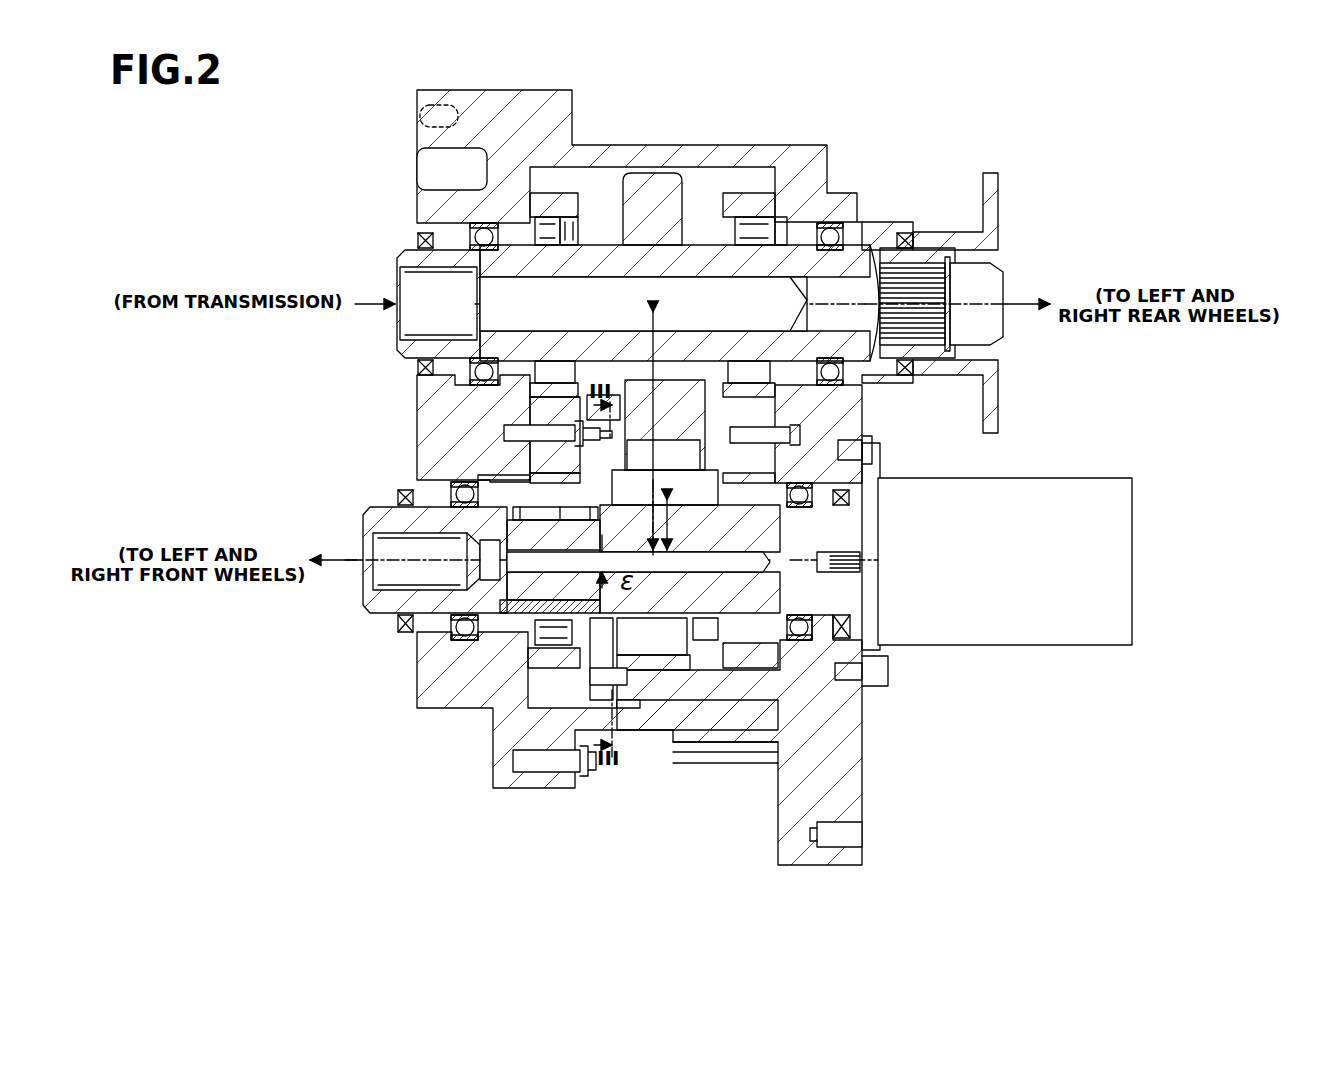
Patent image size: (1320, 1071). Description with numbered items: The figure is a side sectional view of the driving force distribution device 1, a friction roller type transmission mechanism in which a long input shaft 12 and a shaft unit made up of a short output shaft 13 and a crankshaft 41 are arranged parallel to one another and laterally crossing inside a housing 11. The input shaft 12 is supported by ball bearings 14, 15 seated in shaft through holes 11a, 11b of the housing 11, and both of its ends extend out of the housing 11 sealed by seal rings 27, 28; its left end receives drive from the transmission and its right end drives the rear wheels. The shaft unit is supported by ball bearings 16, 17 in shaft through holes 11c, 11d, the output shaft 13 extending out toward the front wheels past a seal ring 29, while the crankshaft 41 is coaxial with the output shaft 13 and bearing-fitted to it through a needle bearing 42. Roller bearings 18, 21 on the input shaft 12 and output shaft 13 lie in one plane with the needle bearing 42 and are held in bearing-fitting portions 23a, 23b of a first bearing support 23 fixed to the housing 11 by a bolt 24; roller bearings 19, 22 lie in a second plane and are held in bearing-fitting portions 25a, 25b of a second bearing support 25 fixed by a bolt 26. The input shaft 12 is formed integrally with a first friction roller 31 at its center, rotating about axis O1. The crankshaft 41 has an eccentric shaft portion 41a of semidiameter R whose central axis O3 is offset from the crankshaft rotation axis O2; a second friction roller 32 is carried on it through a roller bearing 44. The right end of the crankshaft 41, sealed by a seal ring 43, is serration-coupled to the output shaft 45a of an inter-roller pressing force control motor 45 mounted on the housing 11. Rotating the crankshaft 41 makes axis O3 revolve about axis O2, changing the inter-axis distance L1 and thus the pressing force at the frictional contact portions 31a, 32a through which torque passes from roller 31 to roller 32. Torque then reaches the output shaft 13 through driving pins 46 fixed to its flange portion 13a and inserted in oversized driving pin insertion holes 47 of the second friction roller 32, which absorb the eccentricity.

The driving force distribution device 1 is at (745, 142).
The housing 11 is at (565, 95).
The shaft through hole 11a is at (425, 240).
The shaft through hole 11b is at (887, 237).
The shaft through hole 11c is at (405, 632).
The shaft through hole 11d is at (848, 640).
The input shaft 12 is at (620, 230).
The output shaft 13 is at (497, 642).
The flange portion 13a is at (565, 774).
The ball bearing 14 is at (478, 235).
The ball bearing 15 is at (832, 235).
The ball bearing 16 is at (466, 642).
The ball bearing 17 is at (800, 640).
The roller bearing 18 is at (555, 235).
The roller bearing 19 is at (750, 235).
The roller bearing 21 is at (520, 605).
The roller bearing 22 is at (835, 640).
The first bearing support 23 is at (553, 193).
The bearing-fitting portion 23a is at (578, 218).
The bearing-fitting portion 23b is at (550, 660).
The bolt 24 is at (560, 470).
The second bearing support 25 is at (750, 195).
The bearing-fitting portion 25a is at (781, 218).
The bearing-fitting portion 25b is at (750, 672).
The bolt 26 is at (800, 432).
The seal ring 27 is at (418, 362).
The seal ring 28 is at (913, 232).
The seal ring 29 is at (405, 495).
The first friction roller 31 is at (653, 170).
The frictional contact portion 31a is at (665, 458).
The second friction roller 32 is at (660, 672).
The frictional contact portion 32a is at (680, 440).
The crankshaft 41 is at (718, 615).
The eccentric shaft portion 41a is at (632, 556).
The needle bearing 42 is at (545, 615).
The seal ring 43 is at (850, 497).
The roller bearing 44 is at (690, 730).
The inter-roller pressing force control motor 45 is at (1085, 647).
The output shaft 45a is at (860, 565).
The driving pin 46 is at (555, 484).
The driving pin insertion hole 47 is at (590, 428).
The rotation axis of first friction roller O1 is at (683, 300).
The rotation axis of crankshaft O2 is at (752, 575).
The central axis of eccentric shaft portion O3 is at (712, 560).
The inter-axis distance L1 is at (690, 490).
The semidiameter R is at (668, 522).